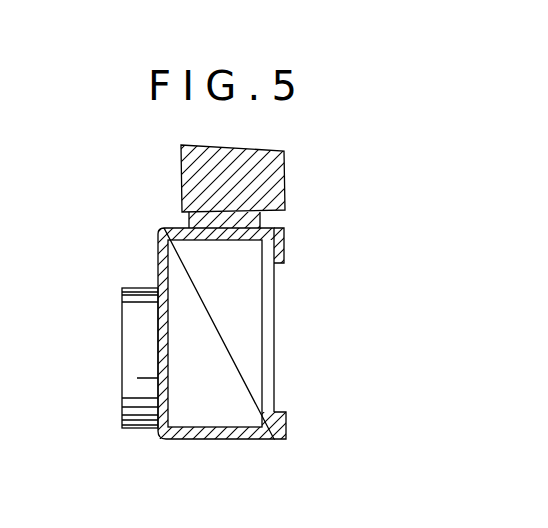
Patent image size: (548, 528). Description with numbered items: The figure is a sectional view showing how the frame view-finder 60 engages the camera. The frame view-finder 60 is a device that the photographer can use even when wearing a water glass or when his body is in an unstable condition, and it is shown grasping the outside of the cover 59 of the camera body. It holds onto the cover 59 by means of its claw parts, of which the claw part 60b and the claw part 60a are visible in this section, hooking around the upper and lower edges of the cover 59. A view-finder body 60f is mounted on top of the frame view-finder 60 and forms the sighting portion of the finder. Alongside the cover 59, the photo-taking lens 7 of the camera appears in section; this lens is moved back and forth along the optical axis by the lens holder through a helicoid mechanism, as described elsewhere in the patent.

The frame view-finder 60 is at (173, 228).
The view-finder body 60f is at (272, 183).
The claw part 60b is at (277, 238).
The claw part 60a is at (283, 414).
The cover 59 is at (205, 418).
The photo-taking lens 7 is at (122, 340).